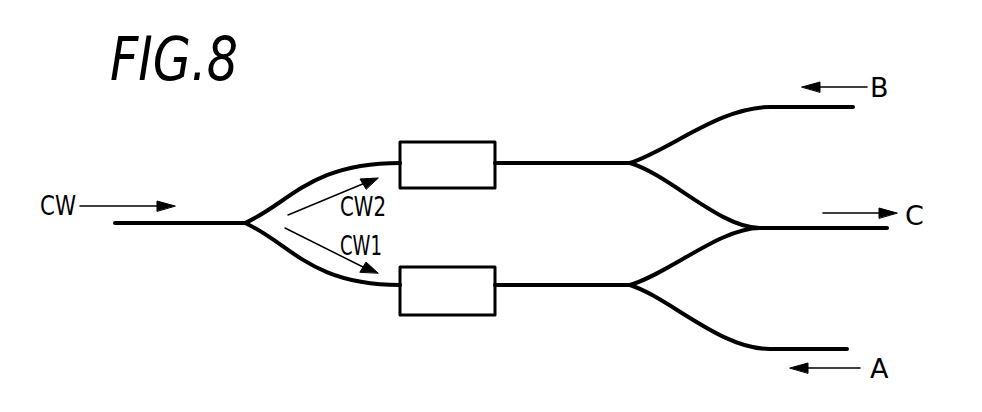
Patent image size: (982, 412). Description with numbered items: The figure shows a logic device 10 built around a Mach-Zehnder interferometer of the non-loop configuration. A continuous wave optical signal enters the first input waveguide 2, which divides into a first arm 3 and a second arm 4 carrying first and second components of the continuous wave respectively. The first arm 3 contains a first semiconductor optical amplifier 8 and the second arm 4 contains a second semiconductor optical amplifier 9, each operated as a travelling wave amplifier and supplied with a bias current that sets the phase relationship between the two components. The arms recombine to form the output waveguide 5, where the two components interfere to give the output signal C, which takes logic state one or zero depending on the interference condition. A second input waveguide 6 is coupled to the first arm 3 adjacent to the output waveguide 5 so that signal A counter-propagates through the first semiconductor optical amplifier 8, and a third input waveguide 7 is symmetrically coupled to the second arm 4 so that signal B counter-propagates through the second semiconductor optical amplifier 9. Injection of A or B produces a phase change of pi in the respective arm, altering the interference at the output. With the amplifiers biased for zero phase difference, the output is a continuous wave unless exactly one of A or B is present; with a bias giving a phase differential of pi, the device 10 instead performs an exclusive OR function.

The first input waveguide 2 is at (215, 222).
The first arm 3 is at (318, 268).
The second arm 4 is at (320, 178).
The output waveguide 5 is at (790, 229).
The second input waveguide 6 is at (733, 345).
The third input waveguide 7 is at (703, 122).
The first semiconductor optical amplifier 8 is at (428, 316).
The second semiconductor optical amplifier 9 is at (414, 142).
The logic device 10 is at (488, 113).